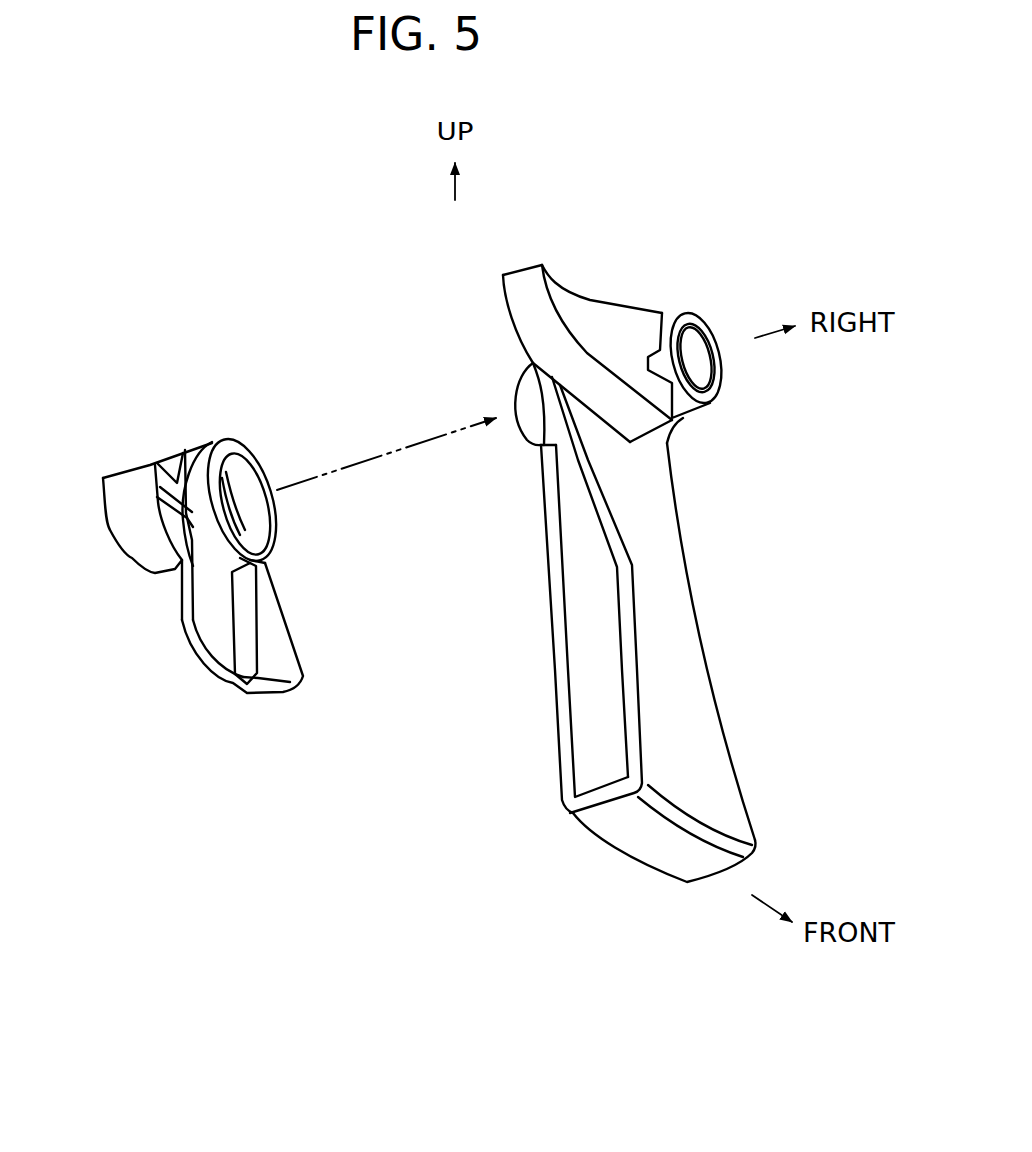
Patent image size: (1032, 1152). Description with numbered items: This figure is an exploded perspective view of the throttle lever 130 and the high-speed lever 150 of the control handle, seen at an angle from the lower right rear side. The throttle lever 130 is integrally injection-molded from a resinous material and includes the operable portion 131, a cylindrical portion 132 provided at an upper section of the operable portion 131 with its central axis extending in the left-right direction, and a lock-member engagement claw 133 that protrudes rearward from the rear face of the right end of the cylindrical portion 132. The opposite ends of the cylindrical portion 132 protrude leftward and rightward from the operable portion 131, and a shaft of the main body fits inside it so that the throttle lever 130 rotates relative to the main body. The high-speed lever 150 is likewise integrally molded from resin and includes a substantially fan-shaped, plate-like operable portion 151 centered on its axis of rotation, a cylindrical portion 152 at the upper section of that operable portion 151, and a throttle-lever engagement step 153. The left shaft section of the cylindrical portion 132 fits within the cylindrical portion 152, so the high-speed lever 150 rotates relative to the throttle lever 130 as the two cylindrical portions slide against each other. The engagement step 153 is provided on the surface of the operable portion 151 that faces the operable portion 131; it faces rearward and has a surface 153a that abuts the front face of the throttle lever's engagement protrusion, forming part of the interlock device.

The throttle lever 130 is at (690, 277).
The operable portion 131 is at (695, 633).
The cylindrical portion 132 is at (712, 400).
The lock-member engagement claw 133 is at (513, 297).
The high-speed lever 150 is at (137, 414).
The operable portion 151 is at (278, 640).
The cylindrical portion 152 is at (245, 457).
The throttle-lever engagement step 153 is at (212, 612).
The surface 153a is at (243, 657).